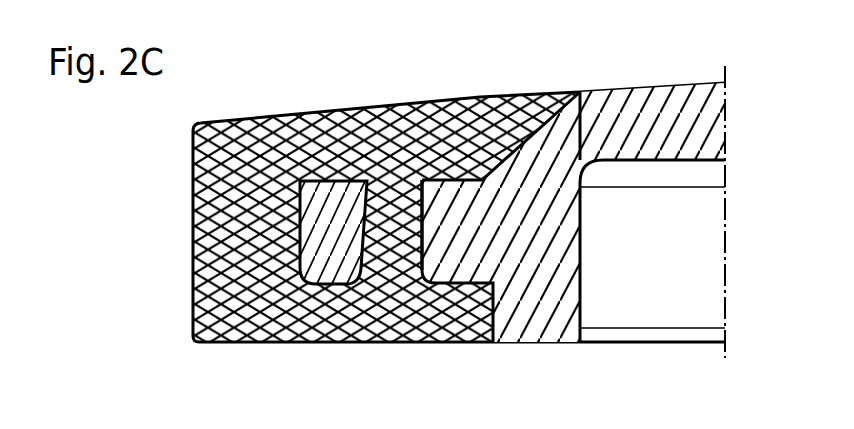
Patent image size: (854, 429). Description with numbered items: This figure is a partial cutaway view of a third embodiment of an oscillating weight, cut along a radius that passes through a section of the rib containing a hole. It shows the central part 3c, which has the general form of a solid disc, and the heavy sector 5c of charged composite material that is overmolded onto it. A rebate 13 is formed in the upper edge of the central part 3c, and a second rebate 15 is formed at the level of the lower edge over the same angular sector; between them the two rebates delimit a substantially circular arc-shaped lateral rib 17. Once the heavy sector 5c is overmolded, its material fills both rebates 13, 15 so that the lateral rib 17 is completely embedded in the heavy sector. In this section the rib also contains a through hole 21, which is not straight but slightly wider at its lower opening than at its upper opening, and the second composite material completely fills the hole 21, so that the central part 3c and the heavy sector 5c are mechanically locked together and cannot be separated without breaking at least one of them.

The central part 3c is at (660, 123).
The heavy sector 5c is at (252, 172).
The rebate 13 is at (472, 165).
The second rebate 15 is at (468, 288).
The lateral rib 17 is at (448, 242).
The through hole 21 is at (402, 228).